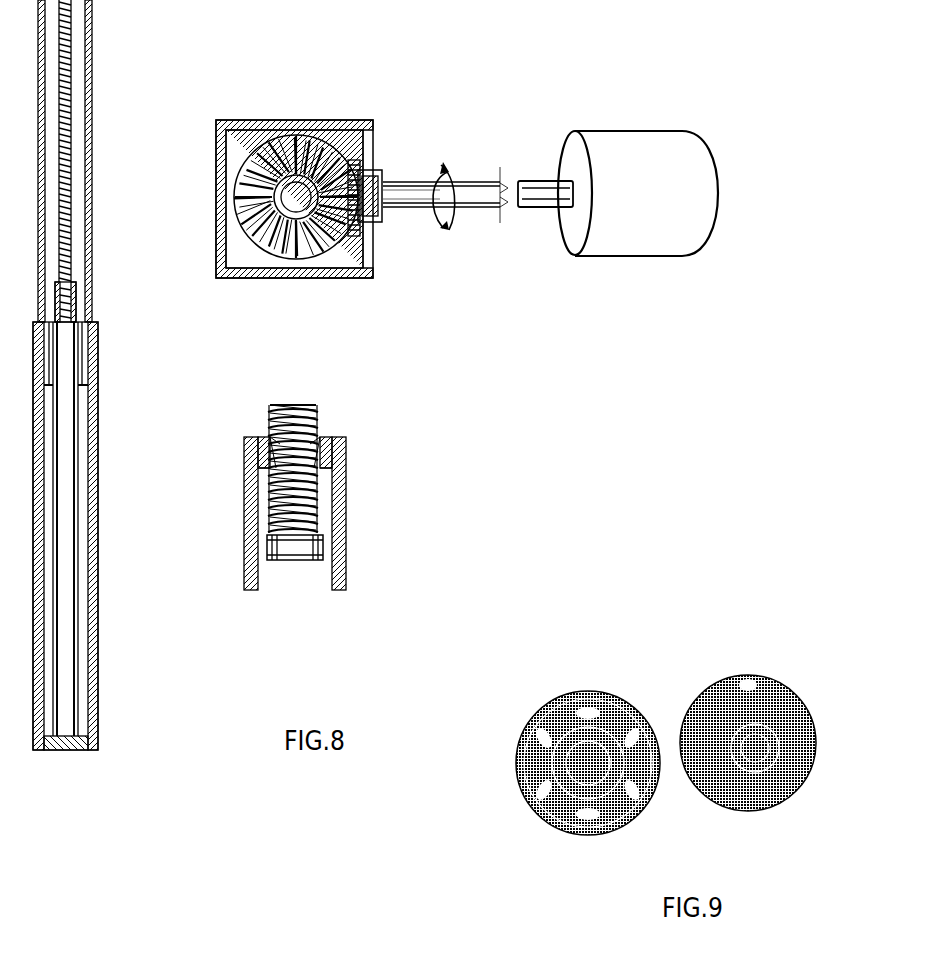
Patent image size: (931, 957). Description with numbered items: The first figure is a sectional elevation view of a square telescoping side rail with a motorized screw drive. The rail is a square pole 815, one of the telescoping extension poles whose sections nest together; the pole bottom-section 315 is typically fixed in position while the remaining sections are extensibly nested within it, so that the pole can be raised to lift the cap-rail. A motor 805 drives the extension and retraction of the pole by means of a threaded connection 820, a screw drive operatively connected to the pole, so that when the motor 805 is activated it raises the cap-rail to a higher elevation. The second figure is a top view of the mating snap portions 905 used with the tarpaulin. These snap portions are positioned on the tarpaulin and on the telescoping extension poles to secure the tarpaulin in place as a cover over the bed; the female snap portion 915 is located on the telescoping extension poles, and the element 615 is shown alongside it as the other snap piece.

In FIG. 8, the square pole 815 is at (265, 118).
In FIG. 8, the pole bottom-section 315 is at (297, 178).
In FIG. 8, the motor 805 is at (653, 203).
In FIG. 8, the threaded connection 820 is at (342, 422).
In FIG. 9, the mating snap portions 905 is at (666, 661).
In FIG. 9, the disc (front) 615 is at (618, 718).
In FIG. 9, the female snap portion 915 is at (769, 687).